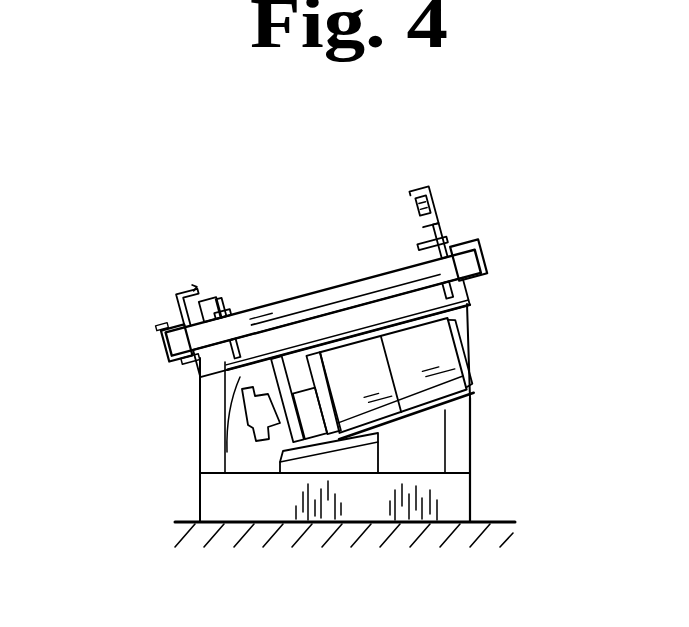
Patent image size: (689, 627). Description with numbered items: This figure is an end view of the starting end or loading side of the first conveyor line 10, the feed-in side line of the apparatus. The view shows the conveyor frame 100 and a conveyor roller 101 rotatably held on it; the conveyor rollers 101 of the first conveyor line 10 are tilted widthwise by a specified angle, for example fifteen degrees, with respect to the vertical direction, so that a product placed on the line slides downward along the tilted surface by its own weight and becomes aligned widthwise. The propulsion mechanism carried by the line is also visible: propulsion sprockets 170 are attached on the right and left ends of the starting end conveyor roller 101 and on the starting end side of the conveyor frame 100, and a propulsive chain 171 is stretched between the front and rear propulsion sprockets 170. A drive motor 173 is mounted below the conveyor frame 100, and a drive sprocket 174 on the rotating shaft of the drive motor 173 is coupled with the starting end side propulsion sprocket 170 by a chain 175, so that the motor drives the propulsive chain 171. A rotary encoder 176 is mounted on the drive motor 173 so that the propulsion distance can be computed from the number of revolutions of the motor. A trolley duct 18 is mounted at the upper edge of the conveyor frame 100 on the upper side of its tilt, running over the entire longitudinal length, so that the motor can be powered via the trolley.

The first conveyor line 10 is at (477, 443).
The trolley duct 18 is at (437, 192).
The conveyor frame 100 is at (208, 422).
The conveyor roller 101 is at (343, 293).
The propulsion sprocket 170 is at (165, 325).
The propulsive chain 171 is at (195, 301).
The drive motor 173 is at (473, 380).
The drive sprocket 174 is at (222, 308).
The chain 175 is at (227, 452).
The rotary encoder 176 is at (473, 330).